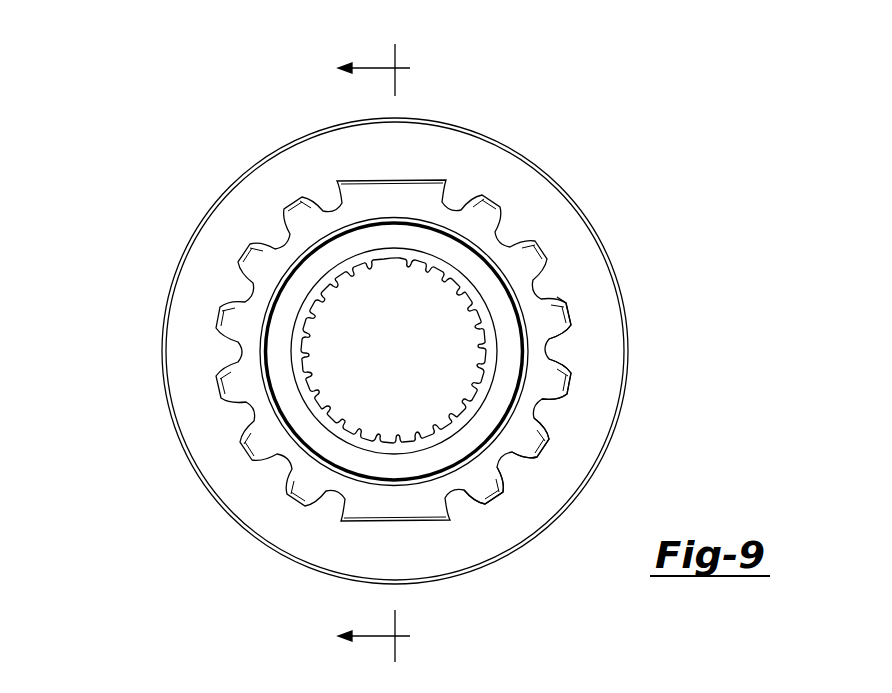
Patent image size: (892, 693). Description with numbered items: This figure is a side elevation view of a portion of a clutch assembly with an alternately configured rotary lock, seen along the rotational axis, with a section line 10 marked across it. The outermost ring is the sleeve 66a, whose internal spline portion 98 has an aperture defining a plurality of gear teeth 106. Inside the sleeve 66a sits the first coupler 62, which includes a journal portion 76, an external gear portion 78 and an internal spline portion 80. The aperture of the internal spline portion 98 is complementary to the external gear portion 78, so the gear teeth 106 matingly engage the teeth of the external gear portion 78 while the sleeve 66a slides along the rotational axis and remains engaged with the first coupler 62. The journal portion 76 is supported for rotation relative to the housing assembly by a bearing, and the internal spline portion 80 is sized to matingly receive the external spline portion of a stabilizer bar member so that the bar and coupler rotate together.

The section line 10- 10 is at (399, 353).
The internal spline portion 98 is at (278, 178).
The sleeve 66a is at (527, 193).
The first coupler 62 is at (522, 273).
The gear teeth 106 is at (560, 348).
The external gear portion 78 is at (523, 438).
The journal portion 76 is at (293, 405).
The internal spline portion 80 is at (346, 364).